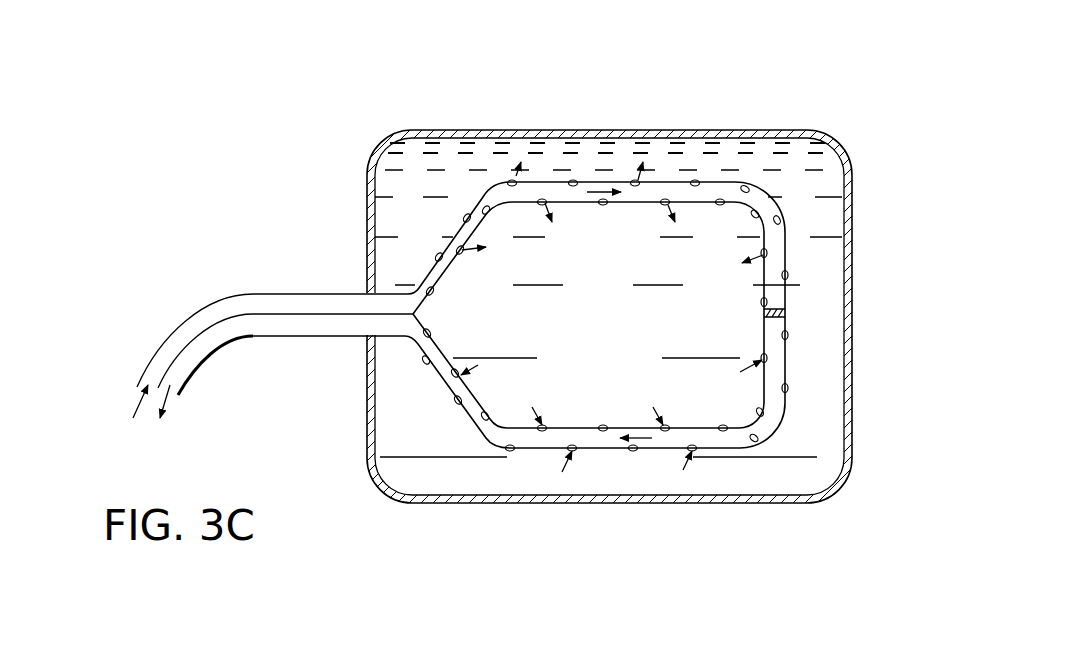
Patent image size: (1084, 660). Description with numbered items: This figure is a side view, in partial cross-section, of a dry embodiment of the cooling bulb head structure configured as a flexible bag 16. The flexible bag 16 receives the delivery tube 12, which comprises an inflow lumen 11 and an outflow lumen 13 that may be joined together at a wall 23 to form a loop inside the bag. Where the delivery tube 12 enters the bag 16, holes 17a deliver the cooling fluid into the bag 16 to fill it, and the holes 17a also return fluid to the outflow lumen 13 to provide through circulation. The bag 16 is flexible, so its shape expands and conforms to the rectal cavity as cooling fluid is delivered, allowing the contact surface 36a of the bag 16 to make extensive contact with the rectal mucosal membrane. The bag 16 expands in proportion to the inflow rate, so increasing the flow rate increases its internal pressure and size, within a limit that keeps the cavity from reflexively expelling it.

The inflow lumen 11 is at (265, 292).
The delivery tube 12 is at (233, 347).
The outflow lumen 13 is at (347, 340).
The flexible bag 16 is at (856, 298).
The holes 17a is at (574, 188).
The wall 23 is at (772, 308).
The contact surface 36a is at (617, 504).